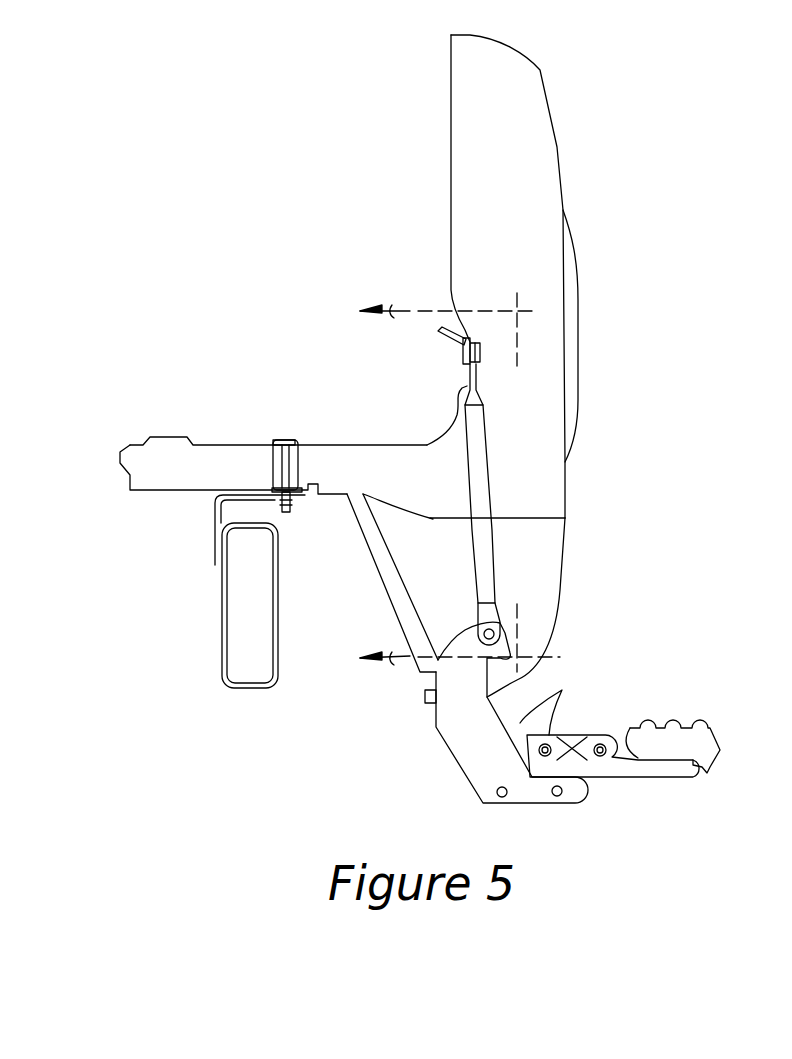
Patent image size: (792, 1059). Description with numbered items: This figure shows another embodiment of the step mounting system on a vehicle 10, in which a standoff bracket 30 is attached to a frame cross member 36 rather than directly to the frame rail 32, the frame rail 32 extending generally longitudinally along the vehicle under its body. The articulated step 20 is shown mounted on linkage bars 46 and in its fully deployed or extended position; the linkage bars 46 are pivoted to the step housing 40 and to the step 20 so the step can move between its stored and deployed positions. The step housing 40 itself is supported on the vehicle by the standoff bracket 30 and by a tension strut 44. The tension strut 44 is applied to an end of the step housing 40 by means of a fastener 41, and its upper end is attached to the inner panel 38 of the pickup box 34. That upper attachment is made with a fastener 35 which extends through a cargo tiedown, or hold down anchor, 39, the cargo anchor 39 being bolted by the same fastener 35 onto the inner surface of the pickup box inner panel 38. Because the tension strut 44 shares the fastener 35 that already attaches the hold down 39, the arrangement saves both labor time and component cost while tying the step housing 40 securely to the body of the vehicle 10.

The vehicle 10 is at (210, 245).
The articulated step 20 is at (707, 745).
The standoff bracket 30 is at (390, 580).
The frame rail 32 is at (221, 632).
The pickup box 34 is at (557, 147).
The fastener 35 is at (480, 353).
The frame cross member 36 is at (394, 457).
The inner panel 38 is at (450, 155).
The cargo tiedown 39 is at (440, 350).
The step housing 40 is at (467, 742).
The fastener 41 is at (505, 645).
The tension strut 44 is at (485, 580).
The linkage bar 46 is at (520, 723).